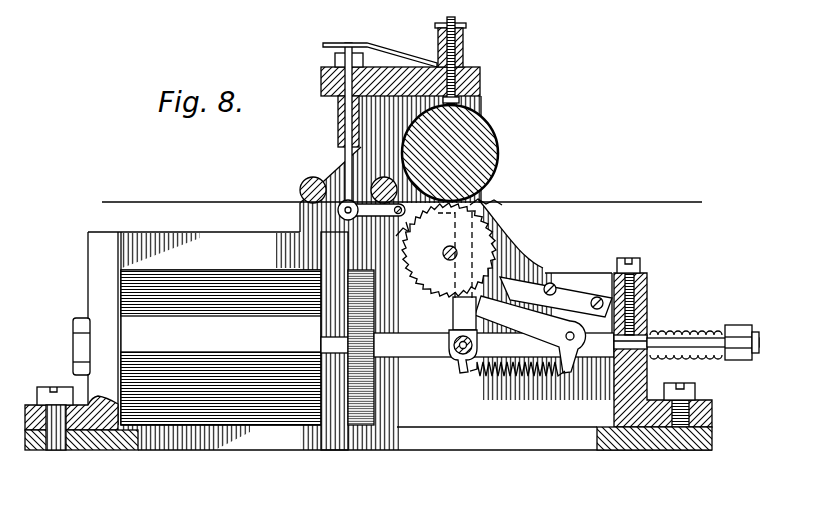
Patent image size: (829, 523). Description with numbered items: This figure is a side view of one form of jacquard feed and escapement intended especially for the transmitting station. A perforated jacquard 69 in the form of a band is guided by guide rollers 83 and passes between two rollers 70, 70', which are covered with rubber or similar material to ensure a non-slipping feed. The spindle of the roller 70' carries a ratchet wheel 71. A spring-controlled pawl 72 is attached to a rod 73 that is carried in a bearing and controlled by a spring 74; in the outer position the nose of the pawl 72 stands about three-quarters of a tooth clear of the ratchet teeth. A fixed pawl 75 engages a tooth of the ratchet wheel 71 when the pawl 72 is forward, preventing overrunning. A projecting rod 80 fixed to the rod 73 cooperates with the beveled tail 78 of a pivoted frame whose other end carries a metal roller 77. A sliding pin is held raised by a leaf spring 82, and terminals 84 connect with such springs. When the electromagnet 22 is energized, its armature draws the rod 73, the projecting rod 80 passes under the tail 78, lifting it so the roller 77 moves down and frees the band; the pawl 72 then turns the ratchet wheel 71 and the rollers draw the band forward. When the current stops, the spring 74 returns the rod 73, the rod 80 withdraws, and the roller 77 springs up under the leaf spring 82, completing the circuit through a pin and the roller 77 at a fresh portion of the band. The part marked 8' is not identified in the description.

The rod 8' is at (335, 126).
The electromagnet 22 is at (235, 408).
The perforated jacquard 69 is at (197, 202).
The roller 70 is at (464, 153).
The roller 70' is at (510, 233).
The ratchet wheel 71 is at (429, 266).
The spring-controlled pawl 72 is at (538, 328).
The rod 73 is at (421, 357).
The spring 74 is at (690, 327).
The fixed pawl 75 is at (537, 282).
The metal roller 77 is at (343, 209).
The tail 78 is at (494, 202).
The projecting rod 80 is at (466, 304).
The leaf spring 82 is at (403, 54).
The guide rollers 83 is at (311, 181).
The terminals 84 is at (463, 38).